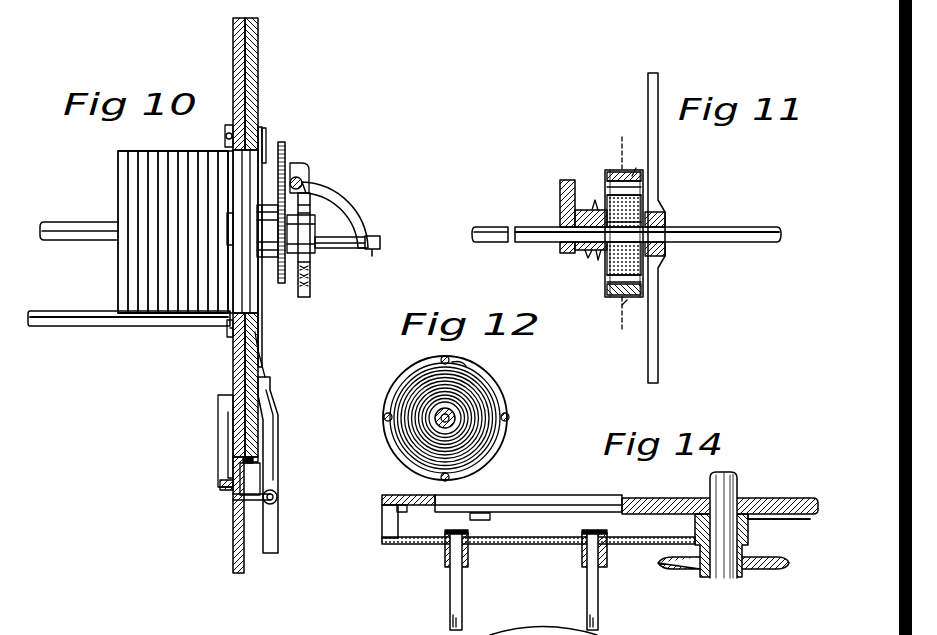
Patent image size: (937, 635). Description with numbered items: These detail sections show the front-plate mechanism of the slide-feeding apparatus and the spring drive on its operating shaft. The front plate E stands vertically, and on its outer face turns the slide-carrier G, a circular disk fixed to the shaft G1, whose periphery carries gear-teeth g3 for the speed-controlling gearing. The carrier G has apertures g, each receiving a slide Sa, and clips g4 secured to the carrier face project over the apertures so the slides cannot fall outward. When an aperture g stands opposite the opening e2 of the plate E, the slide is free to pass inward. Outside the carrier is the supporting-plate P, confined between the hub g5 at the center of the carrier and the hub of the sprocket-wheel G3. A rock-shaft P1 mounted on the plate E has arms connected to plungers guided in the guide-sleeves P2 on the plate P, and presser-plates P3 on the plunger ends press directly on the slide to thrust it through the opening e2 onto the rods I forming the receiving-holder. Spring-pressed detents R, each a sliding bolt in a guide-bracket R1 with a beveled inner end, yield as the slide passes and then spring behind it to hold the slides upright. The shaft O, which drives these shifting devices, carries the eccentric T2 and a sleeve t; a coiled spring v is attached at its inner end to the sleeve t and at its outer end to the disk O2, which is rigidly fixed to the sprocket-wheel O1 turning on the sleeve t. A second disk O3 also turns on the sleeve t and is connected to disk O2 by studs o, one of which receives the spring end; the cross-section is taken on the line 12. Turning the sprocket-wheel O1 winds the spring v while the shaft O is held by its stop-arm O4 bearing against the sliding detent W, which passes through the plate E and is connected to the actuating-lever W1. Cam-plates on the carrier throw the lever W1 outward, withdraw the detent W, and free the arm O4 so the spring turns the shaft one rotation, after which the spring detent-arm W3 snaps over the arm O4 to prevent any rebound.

In FIG. 10, the slide-carrier G is at (257, 52).
In FIG. 14, the slide-carrier G is at (780, 538).
In FIG. 10, the front plate E is at (235, 538).
In FIG. 11, the front plate E is at (659, 343).
In FIG. 14, the front plate E is at (790, 492).
In FIG. 10, the supporting-plate P is at (258, 177).
In FIG. 14, the supporting-plate P is at (388, 518).
In FIG. 10, the clips or plates g4 is at (264, 133).
In FIG. 14, the clips or plates g4 is at (480, 517).
In FIG. 10, the slides Sa is at (157, 152).
In FIG. 10, the opening or aperture e2 is at (230, 167).
In FIG. 10, the spring-pressed detent R is at (230, 128).
In FIG. 10, the guide-bracket R1 is at (227, 332).
In FIG. 10, the rods I is at (88, 240).
In FIG. 10, the openings or apertures g is at (262, 173).
In FIG. 14, the openings or apertures g is at (565, 512).
In FIG. 10, the presser-plates P3 is at (277, 283).
In FIG. 14, the presser-plates P3 is at (587, 532).
In FIG. 10, the guide-sleeves P2 is at (340, 248).
In FIG. 14, the guide-sleeves P2 is at (447, 553).
In FIG. 10, the rock-shaft P1 is at (303, 175).
In FIG. 10, the sprocket-wheel G3 is at (262, 312).
In FIG. 14, the sprocket-wheel G3 is at (765, 571).
In FIG. 10, the actuating-lever W1 is at (233, 358).
In FIG. 10, the spring detent-arm W3 is at (220, 438).
In FIG. 10, the peripheral gear-teeth g3 is at (250, 463).
In FIG. 14, the peripheral gear-teeth g3 is at (383, 503).
In FIG. 10, the sliding detent W is at (253, 492).
In FIG. 10, the stop-arm O4 is at (220, 490).
In FIG. 11, the shaft O is at (770, 242).
In FIG. 12, the shaft O is at (473, 400).
In FIG. 11, the eccentric T2 is at (560, 203).
In FIG. 11, the disk O2 is at (607, 190).
In FIG. 11, the sprocket-wheel O1 is at (597, 260).
In FIG. 11, the spring v is at (641, 203).
In FIG. 12, the spring v is at (473, 413).
In FIG. 11, the second disk O3 is at (642, 187).
In FIG. 12, the second disk O3 is at (507, 430).
In FIG. 11, the sleeve t is at (642, 267).
In FIG. 12, the sleeve t is at (440, 418).
In FIG. 11, the section line 12 is at (618, 236).
In FIG. 11, the studs o is at (629, 237).
In FIG. 12, the studs o is at (384, 417).
In FIG. 14, the shaft G1 is at (710, 482).
In FIG. 14, the hub g5 is at (750, 525).